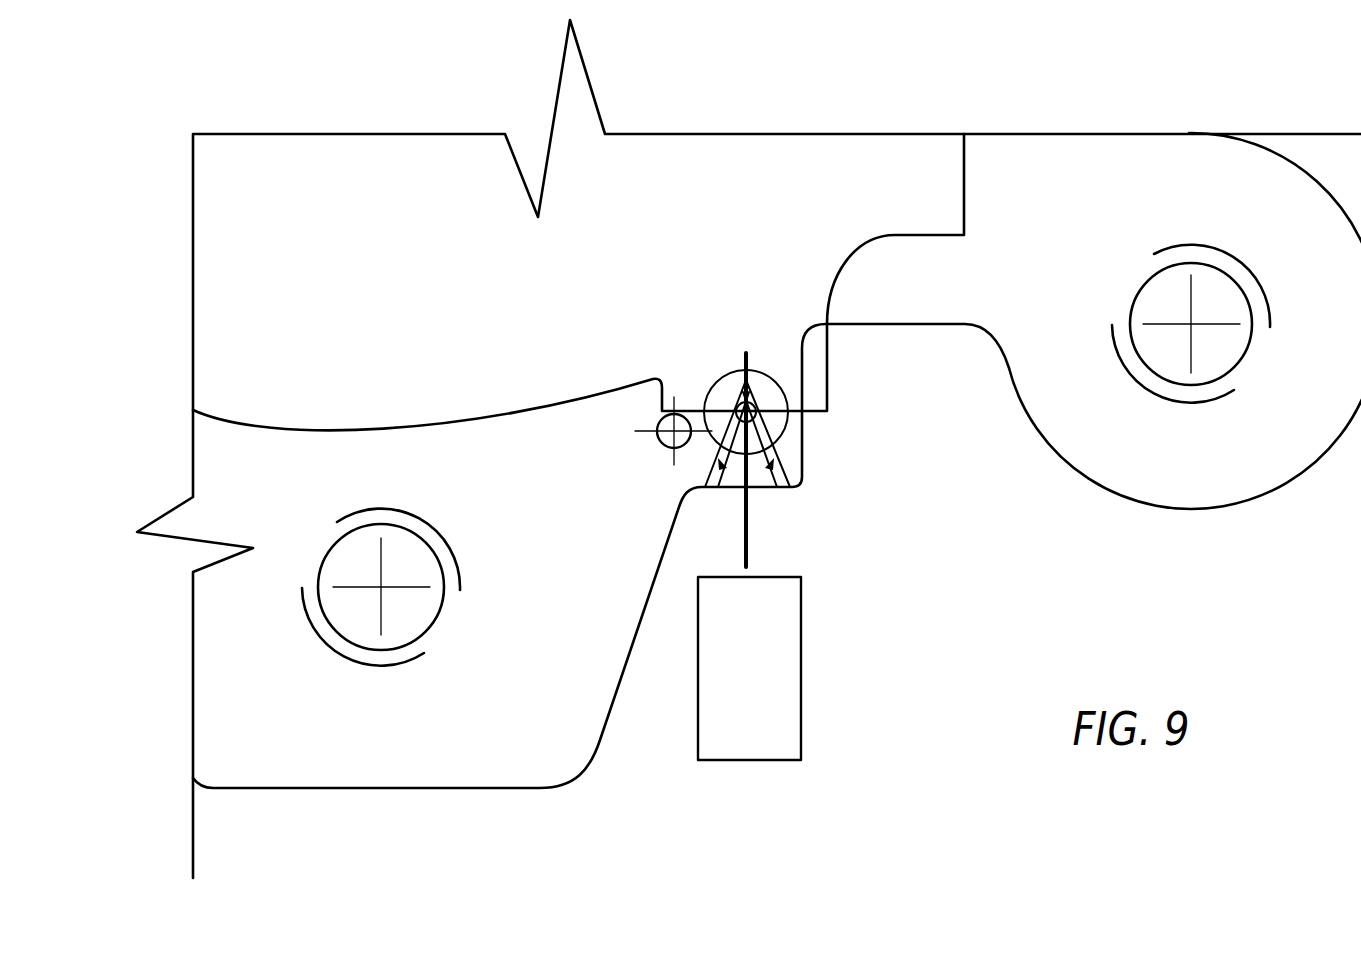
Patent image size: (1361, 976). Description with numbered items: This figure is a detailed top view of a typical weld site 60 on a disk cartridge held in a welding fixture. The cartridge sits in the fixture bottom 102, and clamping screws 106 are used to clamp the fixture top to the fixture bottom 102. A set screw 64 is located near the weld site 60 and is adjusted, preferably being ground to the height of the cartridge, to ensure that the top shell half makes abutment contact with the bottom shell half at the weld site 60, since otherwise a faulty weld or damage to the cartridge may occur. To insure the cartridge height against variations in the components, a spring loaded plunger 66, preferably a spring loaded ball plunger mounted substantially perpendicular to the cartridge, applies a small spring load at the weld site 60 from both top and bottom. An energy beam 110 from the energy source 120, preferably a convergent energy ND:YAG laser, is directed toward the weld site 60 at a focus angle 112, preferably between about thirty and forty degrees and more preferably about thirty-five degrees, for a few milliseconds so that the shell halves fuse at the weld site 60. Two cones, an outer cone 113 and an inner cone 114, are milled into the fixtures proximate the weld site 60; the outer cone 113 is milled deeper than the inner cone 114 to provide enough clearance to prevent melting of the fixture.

The weld site 60 is at (758, 405).
The set screw 64 is at (657, 437).
The spring loaded plunger 66 is at (777, 380).
The fixture bottom 102 is at (1130, 470).
The clamping screws 106 is at (1250, 347).
The energy beam 110 is at (750, 542).
The focus angle 112 is at (738, 470).
The outer cone 113 is at (779, 472).
The inner cone 114 is at (790, 485).
The energy source 120 is at (725, 717).